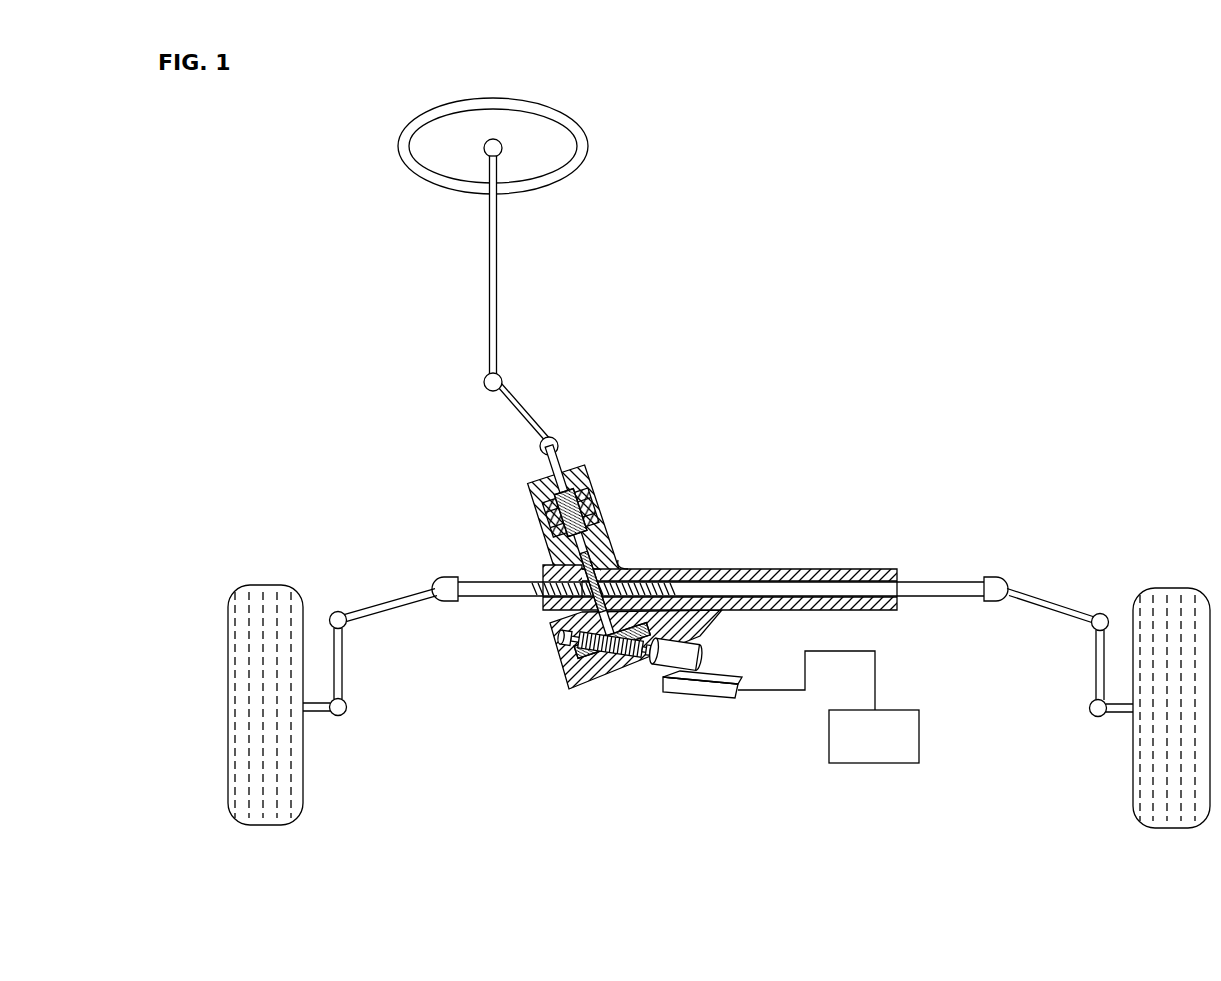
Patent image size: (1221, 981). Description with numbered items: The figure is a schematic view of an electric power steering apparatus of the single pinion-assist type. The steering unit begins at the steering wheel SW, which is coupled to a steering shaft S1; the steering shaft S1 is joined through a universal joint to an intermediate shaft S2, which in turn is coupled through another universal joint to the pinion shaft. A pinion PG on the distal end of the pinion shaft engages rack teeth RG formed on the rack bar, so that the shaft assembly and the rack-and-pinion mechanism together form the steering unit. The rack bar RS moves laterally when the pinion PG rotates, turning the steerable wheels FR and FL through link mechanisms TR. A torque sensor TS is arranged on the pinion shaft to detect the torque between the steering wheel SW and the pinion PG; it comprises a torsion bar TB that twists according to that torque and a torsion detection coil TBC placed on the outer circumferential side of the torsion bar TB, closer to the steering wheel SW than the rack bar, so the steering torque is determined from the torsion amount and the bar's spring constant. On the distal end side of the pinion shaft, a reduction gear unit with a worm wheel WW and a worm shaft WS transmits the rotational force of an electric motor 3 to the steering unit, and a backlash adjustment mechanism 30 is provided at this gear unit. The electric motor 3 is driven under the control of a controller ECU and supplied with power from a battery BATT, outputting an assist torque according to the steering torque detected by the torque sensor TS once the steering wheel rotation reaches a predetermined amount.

The steering wheel SW is at (588, 147).
The steering shaft S1 is at (497, 268).
The intermediate shaft S2 is at (502, 396).
The torque sensor TS is at (579, 492).
The torsion bar TB is at (541, 484).
The torsion detection coil TBC is at (597, 490).
The rack teeth RG is at (695, 570).
The pinion PG is at (555, 556).
The rack shaft RS is at (948, 581).
The steerable wheel FR is at (268, 585).
The steerable wheel FL is at (1172, 588).
The backlash adjustment mechanism 30 is at (548, 637).
The electric motor 3 is at (698, 649).
The worm wheel WW is at (593, 664).
The worm shaft WS is at (620, 665).
The controller ECU is at (704, 693).
The link mechanism TR is at (446, 604).
The battery BATT is at (828, 707).